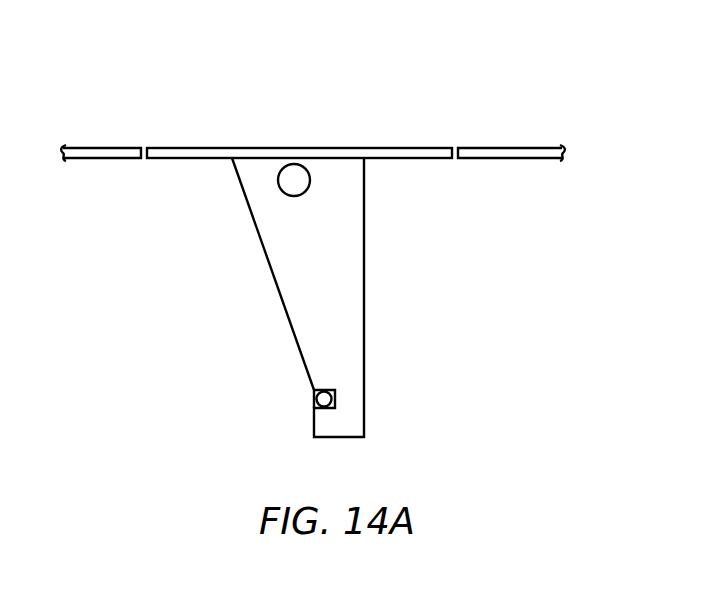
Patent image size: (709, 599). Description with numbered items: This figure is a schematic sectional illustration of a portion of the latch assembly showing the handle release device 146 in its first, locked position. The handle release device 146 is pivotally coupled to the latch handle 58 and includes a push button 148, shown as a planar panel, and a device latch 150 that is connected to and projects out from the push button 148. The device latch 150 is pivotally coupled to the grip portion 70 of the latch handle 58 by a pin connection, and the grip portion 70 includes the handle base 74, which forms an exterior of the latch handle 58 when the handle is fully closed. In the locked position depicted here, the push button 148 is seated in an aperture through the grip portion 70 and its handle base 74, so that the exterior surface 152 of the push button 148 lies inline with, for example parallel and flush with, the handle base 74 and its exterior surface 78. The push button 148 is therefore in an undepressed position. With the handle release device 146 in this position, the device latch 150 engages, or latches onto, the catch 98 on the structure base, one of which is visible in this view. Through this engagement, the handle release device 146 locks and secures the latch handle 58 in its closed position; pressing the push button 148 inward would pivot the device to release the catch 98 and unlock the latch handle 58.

The handle release device 146 is at (366, 95).
The push button 148 is at (241, 147).
The exterior surface 152 is at (299, 153).
The device latch 150 is at (365, 323).
The catch 98 is at (317, 396).
The handle base 74 is at (101, 147).
The latch handle 58 is at (497, 125).
The grip portion 70 is at (527, 127).
The exterior surface 78 is at (540, 147).